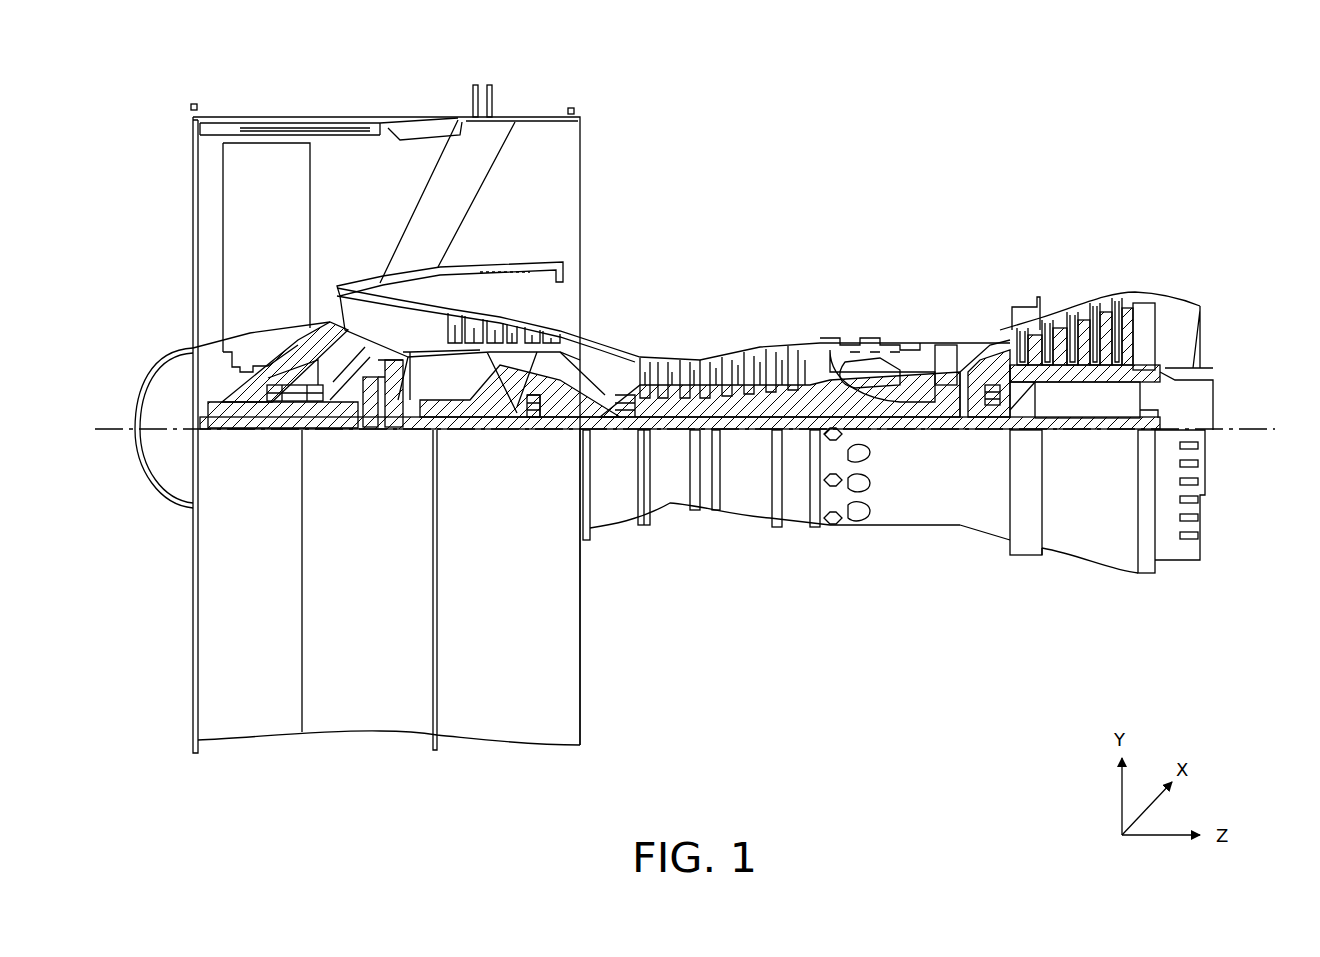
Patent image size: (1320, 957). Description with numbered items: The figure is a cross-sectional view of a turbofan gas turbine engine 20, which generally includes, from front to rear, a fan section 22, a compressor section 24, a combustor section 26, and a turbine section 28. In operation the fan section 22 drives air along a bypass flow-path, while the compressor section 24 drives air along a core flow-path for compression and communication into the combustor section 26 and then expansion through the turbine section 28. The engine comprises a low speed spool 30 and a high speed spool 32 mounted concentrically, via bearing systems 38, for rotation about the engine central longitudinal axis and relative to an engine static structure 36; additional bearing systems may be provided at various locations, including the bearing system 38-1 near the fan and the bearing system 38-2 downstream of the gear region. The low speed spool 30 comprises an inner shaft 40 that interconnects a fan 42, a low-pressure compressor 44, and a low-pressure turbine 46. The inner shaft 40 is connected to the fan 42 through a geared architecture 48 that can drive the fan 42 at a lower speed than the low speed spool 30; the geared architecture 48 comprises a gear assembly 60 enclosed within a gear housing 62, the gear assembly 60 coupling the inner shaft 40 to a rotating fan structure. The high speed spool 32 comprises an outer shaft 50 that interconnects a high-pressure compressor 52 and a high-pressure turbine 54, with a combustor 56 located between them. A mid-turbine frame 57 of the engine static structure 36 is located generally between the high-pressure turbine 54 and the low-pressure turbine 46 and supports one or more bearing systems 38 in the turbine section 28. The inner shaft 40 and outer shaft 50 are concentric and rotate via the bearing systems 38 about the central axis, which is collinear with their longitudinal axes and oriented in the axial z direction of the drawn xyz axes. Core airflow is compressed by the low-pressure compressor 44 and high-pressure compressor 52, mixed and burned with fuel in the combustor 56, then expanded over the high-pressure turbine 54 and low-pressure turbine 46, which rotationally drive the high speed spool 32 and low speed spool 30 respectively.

The gas turbine engine 20 is at (920, 150).
The fan section 22 is at (420, 95).
The compressor section 24 is at (440, 228).
The combustor section 26 is at (925, 228).
The turbine section 28 is at (1145, 228).
The low speed spool 30 is at (755, 440).
The high speed spool 32 is at (800, 402).
The engine static structure 36 is at (955, 510).
The bearing system 38 is at (965, 430).
The bearing system 38-1 is at (275, 410).
The bearing system 38-2 is at (530, 420).
The inner shaft 40 is at (605, 435).
The fan 42 is at (277, 241).
The low-pressure compressor 44 is at (505, 333).
The low-pressure turbine 46 is at (1083, 306).
The geared architecture 48 is at (398, 440).
The outer shaft 50 is at (865, 412).
The high-pressure compressor 52 is at (725, 372).
The high-pressure turbine 54 is at (930, 360).
The combustor 56 is at (868, 350).
The mid-turbine frame 57 is at (980, 372).
The gear assembly 60 is at (402, 405).
The gear housing 62 is at (400, 370).